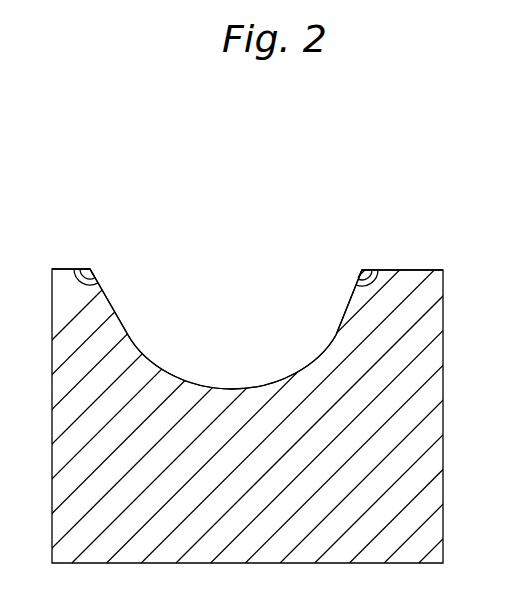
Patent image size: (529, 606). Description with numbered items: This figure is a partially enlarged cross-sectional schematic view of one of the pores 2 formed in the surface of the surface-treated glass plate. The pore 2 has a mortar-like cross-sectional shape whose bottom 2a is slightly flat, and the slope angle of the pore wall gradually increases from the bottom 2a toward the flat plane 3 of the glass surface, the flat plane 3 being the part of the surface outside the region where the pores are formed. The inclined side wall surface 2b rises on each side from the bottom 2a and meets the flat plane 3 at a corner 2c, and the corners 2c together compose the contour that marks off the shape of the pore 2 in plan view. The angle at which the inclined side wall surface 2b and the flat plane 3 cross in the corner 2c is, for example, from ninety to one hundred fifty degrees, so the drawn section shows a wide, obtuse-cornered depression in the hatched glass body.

The pore 2 is at (258, 265).
The bottom 2a is at (229, 388).
The inclined side wall surface 2b is at (115, 315).
The corner 2c is at (90, 268).
The flat plane 3 is at (63, 268).